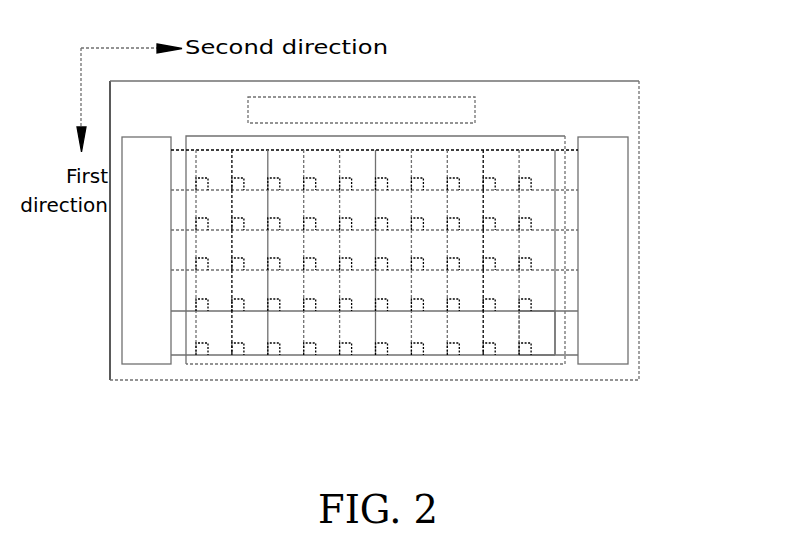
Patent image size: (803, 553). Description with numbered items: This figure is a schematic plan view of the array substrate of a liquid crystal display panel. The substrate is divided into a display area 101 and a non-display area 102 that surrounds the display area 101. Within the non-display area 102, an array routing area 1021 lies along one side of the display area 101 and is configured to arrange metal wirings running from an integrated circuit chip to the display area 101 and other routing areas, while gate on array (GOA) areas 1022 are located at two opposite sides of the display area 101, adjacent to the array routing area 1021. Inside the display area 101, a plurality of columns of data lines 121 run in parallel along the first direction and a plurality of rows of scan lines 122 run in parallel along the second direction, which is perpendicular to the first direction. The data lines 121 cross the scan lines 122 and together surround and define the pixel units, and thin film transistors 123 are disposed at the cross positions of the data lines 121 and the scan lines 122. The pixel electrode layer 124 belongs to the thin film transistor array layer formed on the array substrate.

The display area 101 is at (388, 358).
The non-display area 102 is at (528, 110).
The array routing area 1021 is at (363, 113).
The gate on array (GOA) areas 1022 is at (600, 273).
The data lines 121 is at (198, 321).
The scan lines 122 is at (224, 313).
The thin film transistors 123 is at (530, 354).
The pixel electrode layer 124 is at (540, 327).